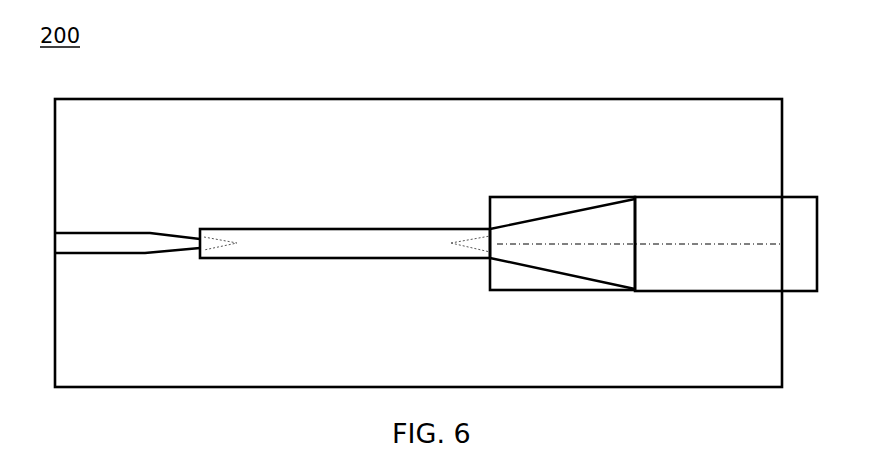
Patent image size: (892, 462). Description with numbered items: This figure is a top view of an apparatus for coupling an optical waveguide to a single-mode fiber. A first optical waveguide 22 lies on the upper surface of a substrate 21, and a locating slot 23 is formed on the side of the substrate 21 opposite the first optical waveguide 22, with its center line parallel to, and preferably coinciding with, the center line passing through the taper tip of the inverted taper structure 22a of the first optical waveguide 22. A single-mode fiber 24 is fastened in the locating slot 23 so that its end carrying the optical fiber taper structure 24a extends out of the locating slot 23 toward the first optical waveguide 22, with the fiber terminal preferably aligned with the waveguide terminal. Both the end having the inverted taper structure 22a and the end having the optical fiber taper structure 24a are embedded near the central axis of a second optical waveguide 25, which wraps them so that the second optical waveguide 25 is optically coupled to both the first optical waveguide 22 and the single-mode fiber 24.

The substrate 21 is at (341, 121).
The first optical waveguide 22 is at (103, 243).
The inverted taper structure 22a is at (210, 245).
The locating slot 23 is at (525, 280).
The single-mode fiber 24 is at (681, 213).
The optical fiber taper structure 24a is at (477, 242).
The second optical waveguide 25 is at (327, 252).